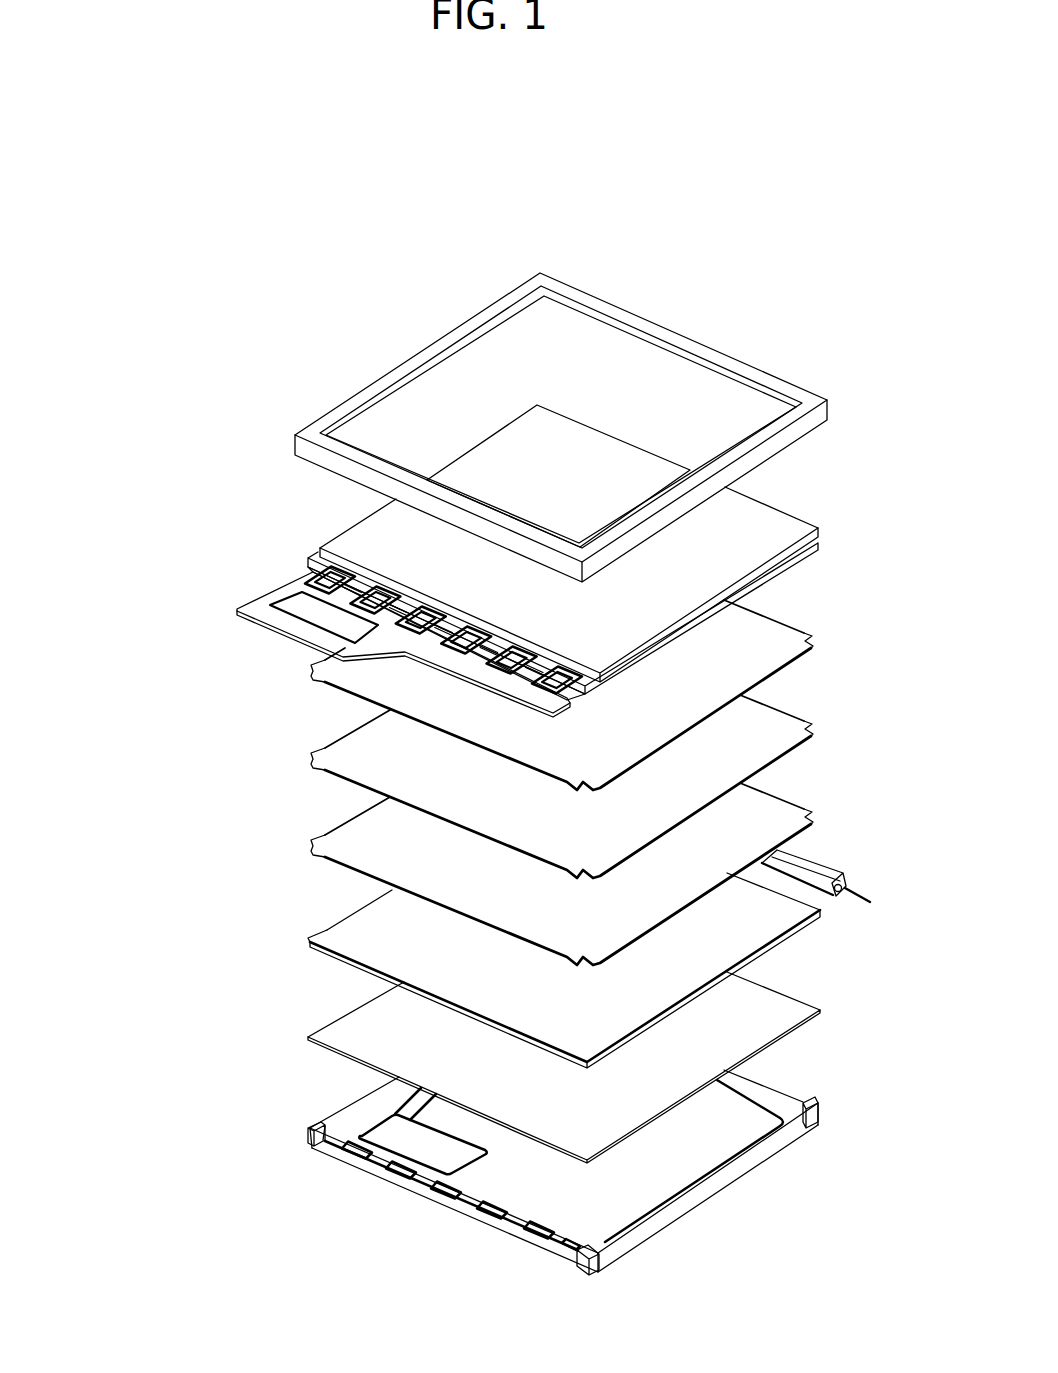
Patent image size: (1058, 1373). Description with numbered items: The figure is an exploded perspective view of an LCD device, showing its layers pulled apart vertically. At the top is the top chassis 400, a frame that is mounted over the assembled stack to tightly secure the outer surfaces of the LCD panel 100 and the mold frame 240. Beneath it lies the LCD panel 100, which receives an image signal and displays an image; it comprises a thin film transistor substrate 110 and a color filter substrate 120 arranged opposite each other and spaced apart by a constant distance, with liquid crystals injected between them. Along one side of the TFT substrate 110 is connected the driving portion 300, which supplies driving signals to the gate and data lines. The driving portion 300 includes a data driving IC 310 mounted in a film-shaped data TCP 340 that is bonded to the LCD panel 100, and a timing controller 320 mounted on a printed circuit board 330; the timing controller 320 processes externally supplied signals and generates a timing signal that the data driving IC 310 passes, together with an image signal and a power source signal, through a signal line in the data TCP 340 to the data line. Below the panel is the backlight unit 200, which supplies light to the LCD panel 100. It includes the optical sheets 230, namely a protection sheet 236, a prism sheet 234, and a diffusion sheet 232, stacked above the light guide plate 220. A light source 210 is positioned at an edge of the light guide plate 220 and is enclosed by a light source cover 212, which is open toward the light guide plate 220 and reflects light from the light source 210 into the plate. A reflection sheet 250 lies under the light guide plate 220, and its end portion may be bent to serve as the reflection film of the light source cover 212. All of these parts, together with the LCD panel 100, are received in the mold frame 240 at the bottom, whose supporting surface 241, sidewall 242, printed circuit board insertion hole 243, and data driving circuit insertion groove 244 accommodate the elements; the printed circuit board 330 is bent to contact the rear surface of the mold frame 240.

The LCD panel 100 is at (870, 558).
The thin film transistor (TFT) substrate 110 is at (777, 566).
The color filter substrate 120 is at (807, 552).
The backlight unit 200 is at (111, 773).
The light source 210 is at (817, 888).
The light source cover 212 is at (800, 861).
The light guide plate 220 is at (327, 930).
The optical sheets 230 is at (170, 717).
The diffusion sheet 232 is at (337, 835).
The prism sheet 234 is at (330, 752).
The protection sheet 236 is at (345, 682).
The mold frame 240 is at (170, 1142).
The supporting surface 241 is at (323, 1134).
The sidewall 242 is at (355, 1163).
The printed circuit board insertion hole 243 is at (428, 1157).
The data driving circuit insertion groove 244 is at (487, 1210).
The reflection sheet 250 is at (357, 1050).
The driving portion 300 is at (170, 503).
The data driving IC 310 is at (313, 570).
The timing controller 320 is at (272, 604).
The printed circuit board 330 is at (297, 633).
The data TCP 340 is at (307, 578).
The top chassis 400 is at (683, 338).